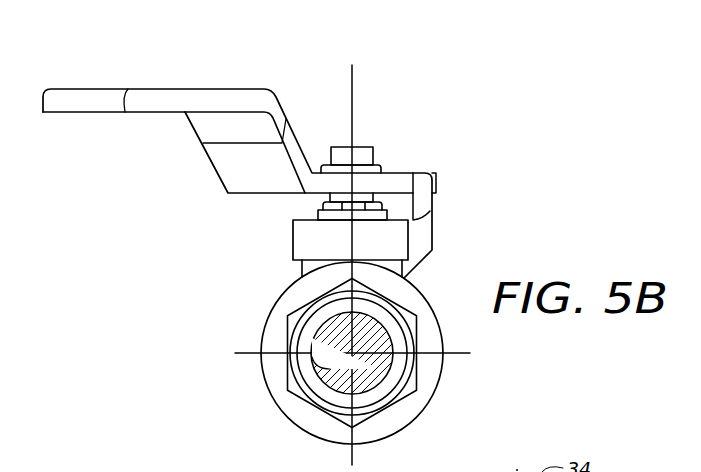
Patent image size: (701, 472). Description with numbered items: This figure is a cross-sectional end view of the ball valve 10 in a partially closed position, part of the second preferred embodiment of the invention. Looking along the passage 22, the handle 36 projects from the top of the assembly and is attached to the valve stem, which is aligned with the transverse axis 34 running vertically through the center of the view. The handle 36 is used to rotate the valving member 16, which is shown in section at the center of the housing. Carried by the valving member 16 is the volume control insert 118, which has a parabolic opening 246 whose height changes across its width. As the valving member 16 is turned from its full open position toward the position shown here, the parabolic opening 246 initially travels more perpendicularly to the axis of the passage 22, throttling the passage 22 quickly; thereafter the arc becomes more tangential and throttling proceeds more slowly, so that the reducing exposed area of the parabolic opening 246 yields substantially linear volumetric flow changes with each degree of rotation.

The ball valve 10 is at (437, 275).
The valving member 16 is at (397, 370).
The passage 22 is at (337, 388).
The transverse axis 34 is at (352, 78).
The handle 36 is at (80, 114).
The volume control insert 118 is at (339, 383).
The parabolic opening 246 is at (375, 367).